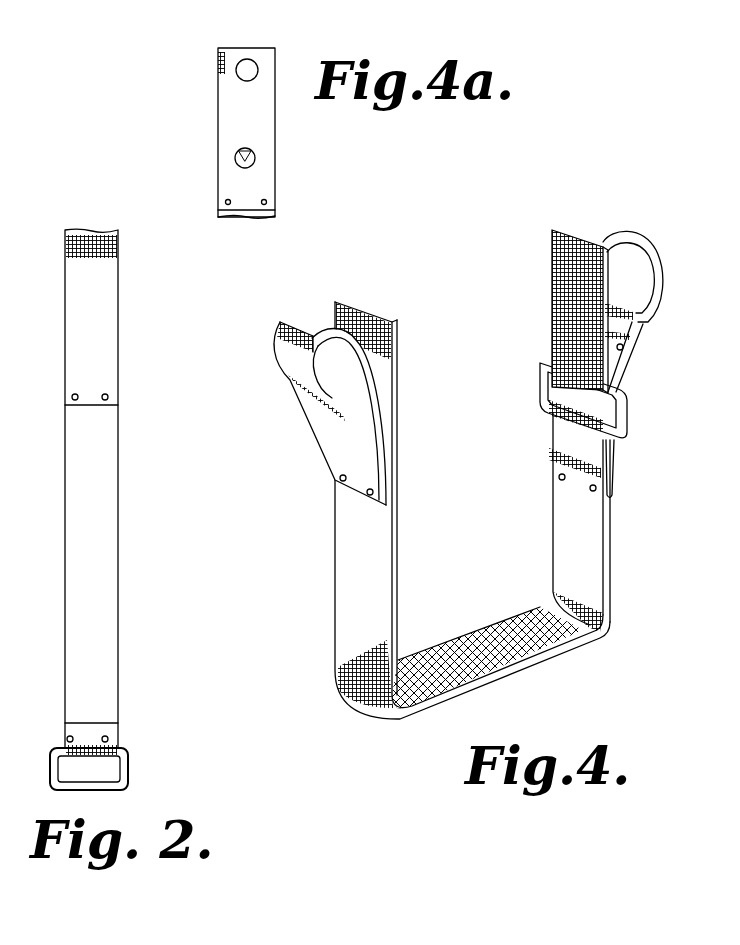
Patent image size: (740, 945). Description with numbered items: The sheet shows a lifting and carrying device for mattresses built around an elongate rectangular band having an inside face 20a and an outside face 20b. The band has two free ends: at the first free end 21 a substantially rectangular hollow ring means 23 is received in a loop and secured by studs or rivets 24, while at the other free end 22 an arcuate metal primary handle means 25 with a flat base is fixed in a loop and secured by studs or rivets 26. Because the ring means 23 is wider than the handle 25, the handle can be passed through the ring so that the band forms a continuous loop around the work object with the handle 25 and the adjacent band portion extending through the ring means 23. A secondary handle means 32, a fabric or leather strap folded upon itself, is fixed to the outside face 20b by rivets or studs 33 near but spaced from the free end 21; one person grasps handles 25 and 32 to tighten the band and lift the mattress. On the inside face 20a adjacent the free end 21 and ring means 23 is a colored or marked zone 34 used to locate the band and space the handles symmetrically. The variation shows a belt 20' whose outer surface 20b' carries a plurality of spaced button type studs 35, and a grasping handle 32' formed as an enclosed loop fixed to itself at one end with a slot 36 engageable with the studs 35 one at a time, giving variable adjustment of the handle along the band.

In FIG. 4A, the belt 20' is at (216, 133).
In FIG. 4, the inside face 20a is at (553, 522).
In FIG. 2, the outside face 20b is at (115, 488).
In FIG. 4, the outside face 20b is at (440, 510).
In FIG. 4A, the outer surface of belt 20b' is at (275, 214).
In FIG. 2, the first free end 21 is at (74, 760).
In FIG. 4, the first free end 21 is at (570, 412).
In FIG. 4, the second free end 22 is at (608, 313).
In FIG. 2, the ring means 23 is at (128, 782).
In FIG. 4, the ring means 23 is at (627, 412).
In FIG. 2, the studs or rivets 24 is at (67, 739).
In FIG. 4, the studs or rivets 24 is at (559, 477).
In FIG. 4, the primary handle means 25 is at (628, 236).
In FIG. 4, the studs or rivets 26 is at (621, 356).
In FIG. 2, the secondary handle means 32 is at (111, 256).
In FIG. 4, the secondary handle means 32 is at (327, 393).
In FIG. 4A, the grasping handle 32' is at (195, 81).
In FIG. 2, the rivets or studs 33 is at (108, 396).
In FIG. 4, the rivets or studs 33 is at (340, 480).
In FIG. 4, the colored or marked zone 34 is at (481, 640).
In FIG. 4A, the button type studs 35 is at (248, 60).
In FIG. 4A, the slot 36 is at (246, 148).